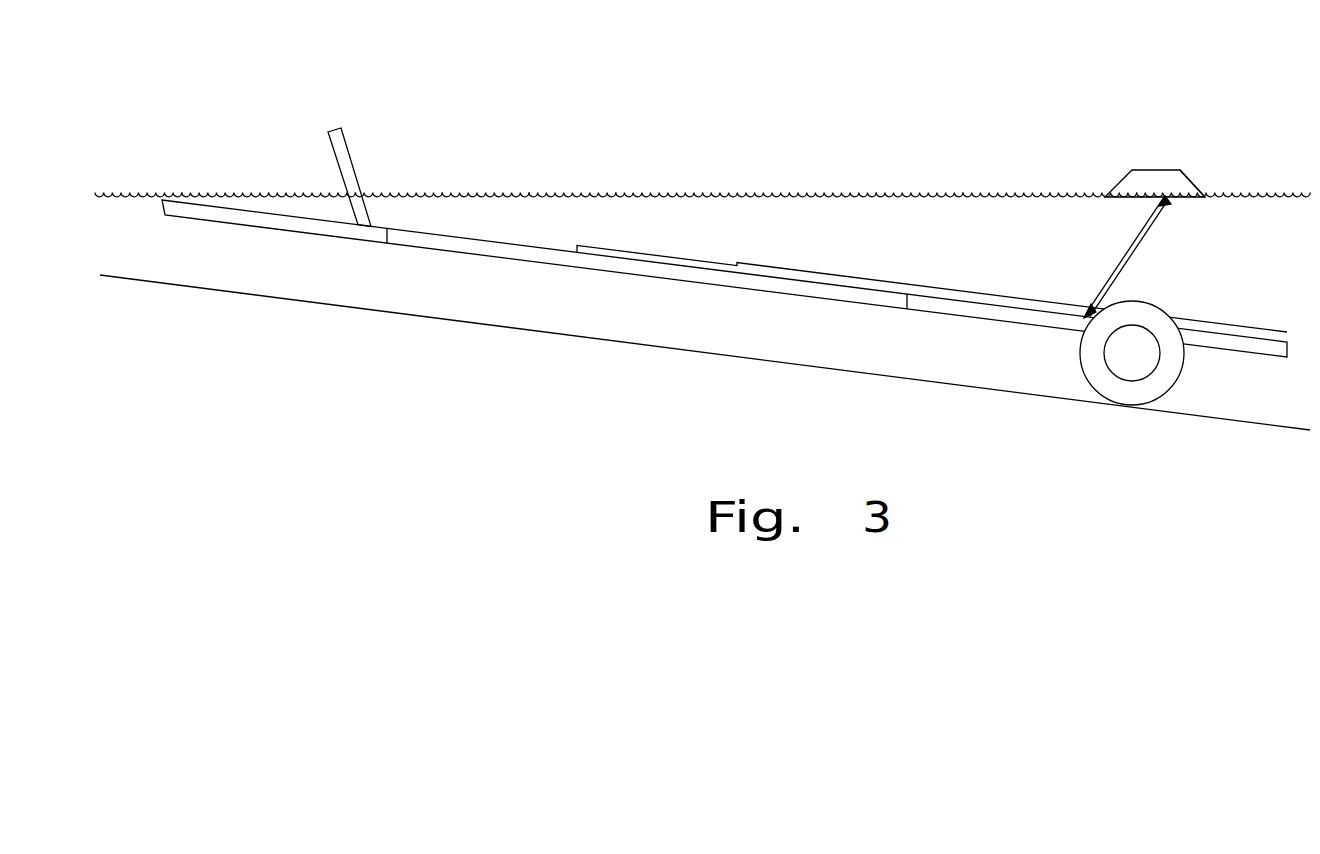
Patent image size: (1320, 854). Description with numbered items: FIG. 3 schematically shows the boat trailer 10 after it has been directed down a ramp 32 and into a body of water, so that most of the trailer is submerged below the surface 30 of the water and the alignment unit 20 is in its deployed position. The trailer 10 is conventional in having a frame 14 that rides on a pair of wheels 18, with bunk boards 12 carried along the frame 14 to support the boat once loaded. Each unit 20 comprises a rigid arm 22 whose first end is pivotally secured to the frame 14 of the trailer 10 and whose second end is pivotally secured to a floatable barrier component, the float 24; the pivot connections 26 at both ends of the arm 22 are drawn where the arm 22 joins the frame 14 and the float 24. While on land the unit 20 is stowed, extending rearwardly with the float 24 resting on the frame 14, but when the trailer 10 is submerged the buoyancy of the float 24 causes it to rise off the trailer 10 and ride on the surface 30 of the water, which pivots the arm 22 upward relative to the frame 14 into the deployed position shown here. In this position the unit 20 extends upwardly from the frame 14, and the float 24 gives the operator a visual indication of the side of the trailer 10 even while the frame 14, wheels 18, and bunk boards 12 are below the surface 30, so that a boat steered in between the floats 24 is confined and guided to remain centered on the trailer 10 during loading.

The boat trailer 10 is at (322, 103).
The bunk boards 12 is at (941, 288).
The frame 14 is at (667, 280).
The wheels 18 is at (1130, 395).
The unit 20 is at (1125, 155).
The rigid arm 22 is at (1137, 250).
The float 24 is at (1185, 168).
The pivot connection 26 is at (1168, 204).
The surface 30 is at (693, 192).
The ramp 32 is at (445, 319).